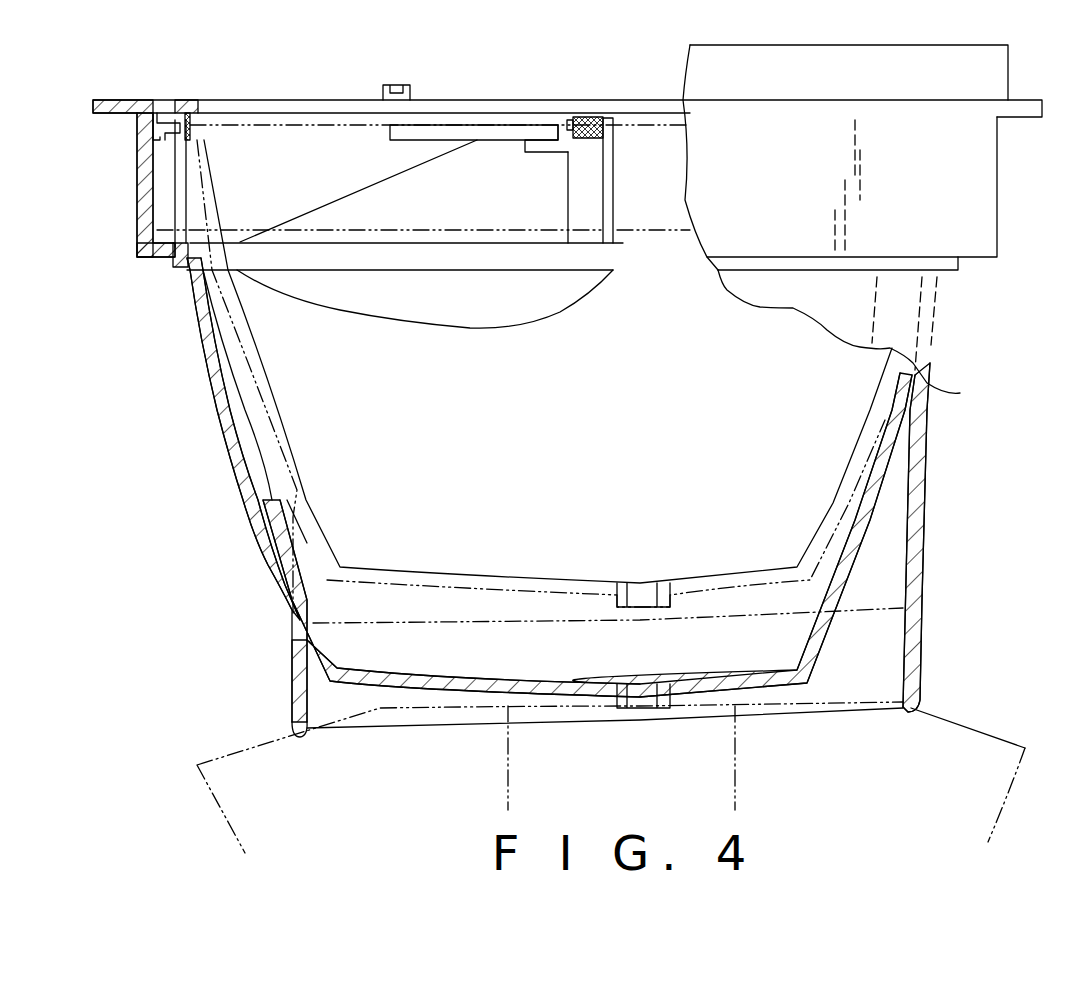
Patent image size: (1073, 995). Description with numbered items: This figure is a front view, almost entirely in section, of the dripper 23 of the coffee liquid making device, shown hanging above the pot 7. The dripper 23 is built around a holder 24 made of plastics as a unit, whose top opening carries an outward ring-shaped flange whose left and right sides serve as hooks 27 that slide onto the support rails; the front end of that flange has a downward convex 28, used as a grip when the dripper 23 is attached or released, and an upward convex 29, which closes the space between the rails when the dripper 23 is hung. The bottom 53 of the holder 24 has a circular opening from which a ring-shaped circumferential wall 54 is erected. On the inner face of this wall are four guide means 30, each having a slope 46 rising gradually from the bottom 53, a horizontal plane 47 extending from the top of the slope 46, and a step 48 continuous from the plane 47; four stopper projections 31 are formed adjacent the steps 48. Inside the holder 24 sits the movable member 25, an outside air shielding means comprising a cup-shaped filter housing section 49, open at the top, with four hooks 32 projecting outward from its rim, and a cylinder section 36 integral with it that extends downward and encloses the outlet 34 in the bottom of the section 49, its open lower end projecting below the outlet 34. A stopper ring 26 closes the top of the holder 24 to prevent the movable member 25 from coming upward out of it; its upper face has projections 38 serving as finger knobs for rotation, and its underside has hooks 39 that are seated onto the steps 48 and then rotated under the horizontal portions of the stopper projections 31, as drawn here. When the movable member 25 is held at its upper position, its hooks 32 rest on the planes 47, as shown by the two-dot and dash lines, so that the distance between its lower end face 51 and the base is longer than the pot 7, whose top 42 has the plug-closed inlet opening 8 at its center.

The pot 7 is at (986, 742).
The inlet opening 8 is at (580, 737).
The dripper 23 is at (988, 272).
The holder 24 is at (997, 192).
The movable member 25 is at (599, 418).
The stopper ring 26 is at (195, 104).
The hooks 27 is at (131, 100).
The downward convex 28 is at (800, 257).
The upward convex 29 is at (690, 55).
The guide means 30 is at (460, 245).
The stopper projections 31 is at (165, 112).
The hooks 32 is at (440, 125).
The outlet 34 is at (645, 708).
The cylinder section 36 is at (922, 662).
The projections 38 is at (393, 85).
The hooks 39 is at (588, 117).
The top 42 is at (233, 752).
The slope 46 is at (367, 190).
The plane 47 is at (497, 140).
The step 48 is at (530, 153).
The filter housing section 49 is at (245, 494).
The lower end face 51 is at (293, 733).
The bottom 53 is at (162, 262).
The circumferential wall 54 is at (137, 206).